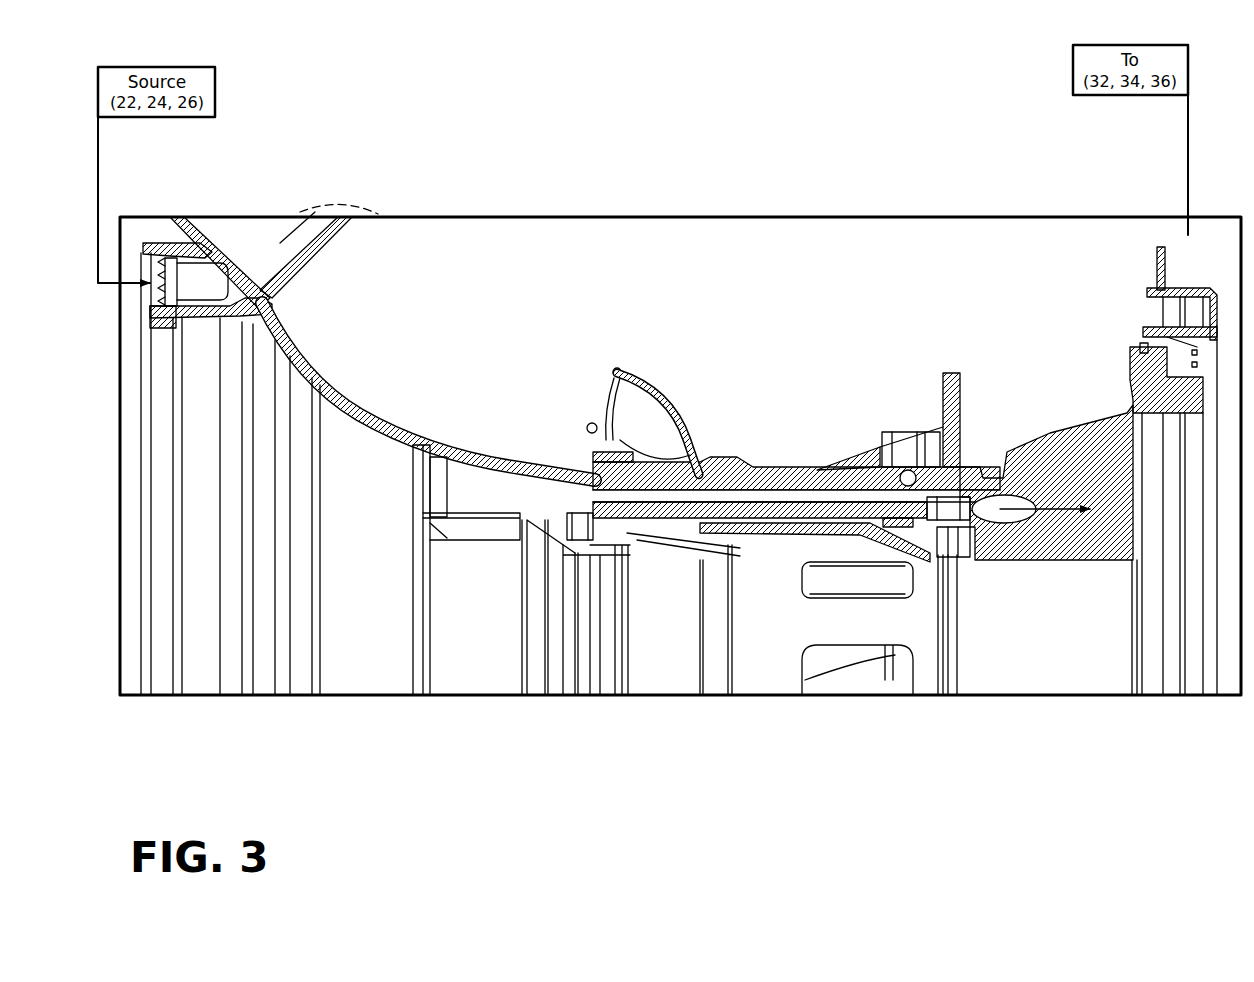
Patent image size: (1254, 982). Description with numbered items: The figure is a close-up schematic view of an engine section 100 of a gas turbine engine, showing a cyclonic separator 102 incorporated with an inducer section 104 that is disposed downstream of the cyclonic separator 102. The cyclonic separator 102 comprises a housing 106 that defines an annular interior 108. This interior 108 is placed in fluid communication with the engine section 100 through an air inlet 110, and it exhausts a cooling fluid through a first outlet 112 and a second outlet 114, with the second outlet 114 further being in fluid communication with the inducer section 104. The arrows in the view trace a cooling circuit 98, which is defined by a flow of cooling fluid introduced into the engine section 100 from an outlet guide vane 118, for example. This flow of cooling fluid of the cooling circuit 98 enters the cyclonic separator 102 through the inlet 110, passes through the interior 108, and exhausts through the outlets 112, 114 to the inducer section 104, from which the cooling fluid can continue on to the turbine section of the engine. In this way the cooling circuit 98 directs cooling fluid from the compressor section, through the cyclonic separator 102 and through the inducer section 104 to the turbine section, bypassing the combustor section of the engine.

The cooling circuit 98 is at (393, 308).
The engine section 100 is at (621, 369).
The cyclonic separator 102 is at (731, 440).
The inducer section 104 is at (1133, 315).
The housing 106 is at (762, 470).
The annular interior 108 is at (820, 497).
The air inlet 110 is at (607, 377).
The first outlet 112 is at (897, 468).
The second outlet 114 is at (1005, 517).
The outlet guide vane 118 is at (273, 293).